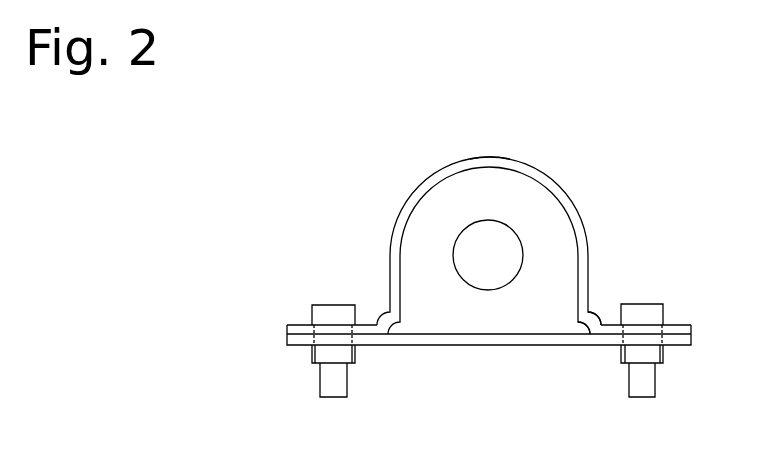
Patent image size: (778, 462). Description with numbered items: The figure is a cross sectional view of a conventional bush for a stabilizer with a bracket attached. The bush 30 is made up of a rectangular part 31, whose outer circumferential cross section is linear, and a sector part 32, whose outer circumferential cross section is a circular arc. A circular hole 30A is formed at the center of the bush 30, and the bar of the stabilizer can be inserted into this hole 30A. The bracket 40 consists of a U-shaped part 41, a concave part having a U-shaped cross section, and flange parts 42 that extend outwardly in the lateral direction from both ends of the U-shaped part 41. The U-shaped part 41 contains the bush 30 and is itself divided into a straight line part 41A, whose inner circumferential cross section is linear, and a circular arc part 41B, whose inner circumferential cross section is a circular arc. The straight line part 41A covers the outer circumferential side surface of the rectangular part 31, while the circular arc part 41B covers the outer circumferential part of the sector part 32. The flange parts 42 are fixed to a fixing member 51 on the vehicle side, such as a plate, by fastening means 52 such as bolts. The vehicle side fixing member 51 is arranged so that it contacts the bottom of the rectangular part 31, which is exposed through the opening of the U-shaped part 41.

The bush 30 is at (413, 142).
The rectangular part 31 is at (428, 290).
The sector part 32 is at (437, 212).
The hole 30A is at (472, 288).
The bracket 40 is at (618, 200).
The U-shaped part 41 is at (582, 238).
The straight line part 41A is at (575, 303).
The circular arc part 41B is at (498, 168).
The flange parts 42 is at (675, 328).
The fixing member 51 is at (383, 340).
The fastening means 52 is at (333, 312).